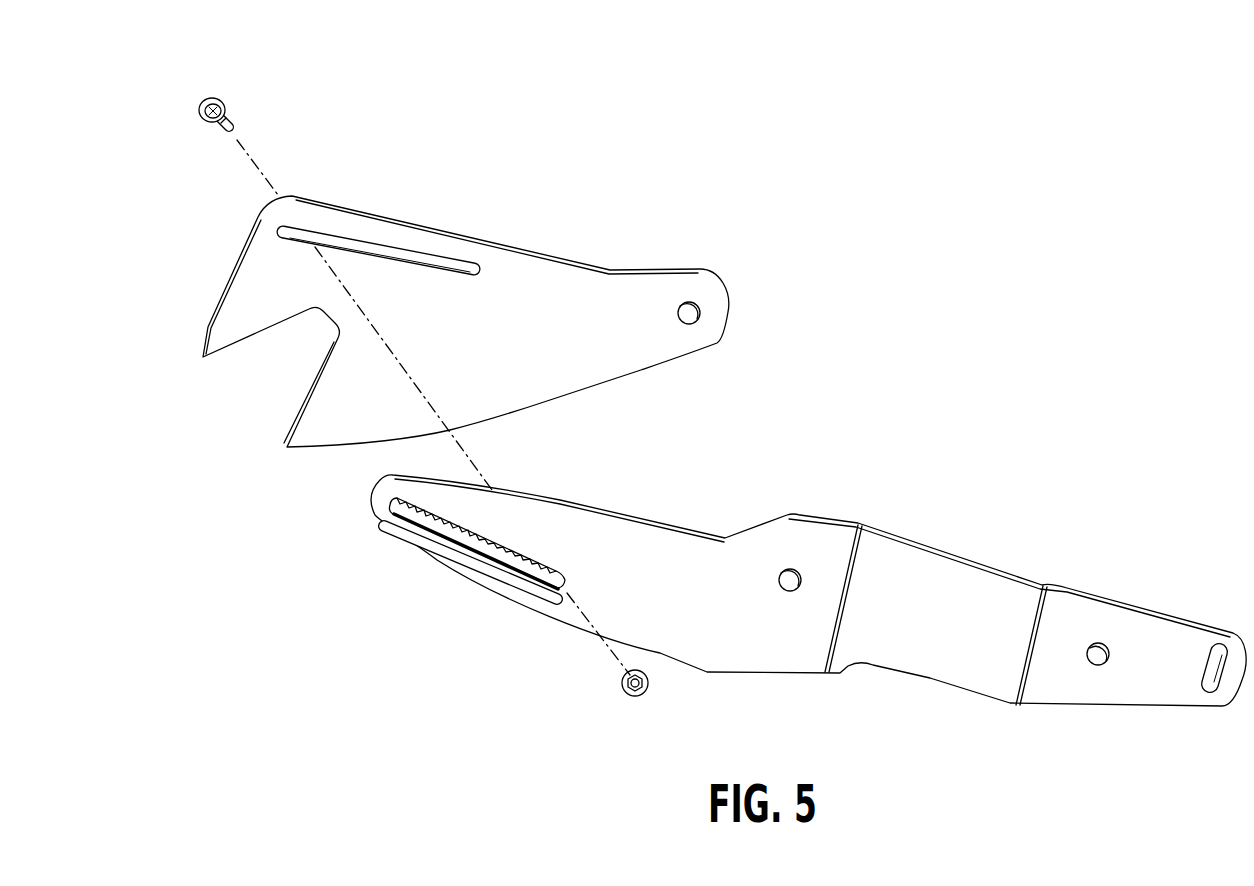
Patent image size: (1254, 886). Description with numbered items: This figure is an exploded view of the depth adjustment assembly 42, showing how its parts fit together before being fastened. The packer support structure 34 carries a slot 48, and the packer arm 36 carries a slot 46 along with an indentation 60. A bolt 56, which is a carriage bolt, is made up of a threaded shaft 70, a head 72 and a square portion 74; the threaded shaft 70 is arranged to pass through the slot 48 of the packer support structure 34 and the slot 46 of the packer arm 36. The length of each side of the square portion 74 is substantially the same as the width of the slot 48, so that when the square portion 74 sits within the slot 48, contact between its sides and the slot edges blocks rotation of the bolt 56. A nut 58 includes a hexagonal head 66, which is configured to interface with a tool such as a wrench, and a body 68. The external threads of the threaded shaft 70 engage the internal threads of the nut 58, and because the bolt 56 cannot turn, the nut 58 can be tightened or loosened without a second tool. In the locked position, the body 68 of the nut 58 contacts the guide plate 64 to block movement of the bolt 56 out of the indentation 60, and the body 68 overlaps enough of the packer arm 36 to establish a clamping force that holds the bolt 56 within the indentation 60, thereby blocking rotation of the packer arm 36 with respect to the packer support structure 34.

The packer support structure 34 is at (632, 268).
The packer arm 36 is at (808, 578).
The depth adjustment assembly 42 is at (466, 289).
The slot 46 is at (510, 528).
The slot 48 is at (326, 246).
The bolt 56 is at (233, 121).
The nut 58 is at (631, 731).
The indentation 60 is at (541, 563).
The guide plate 64 is at (494, 585).
The head 66 is at (647, 695).
The body 68 is at (620, 679).
The threaded shaft 70 is at (212, 122).
The head 72 is at (203, 100).
The square portion 74 is at (223, 98).